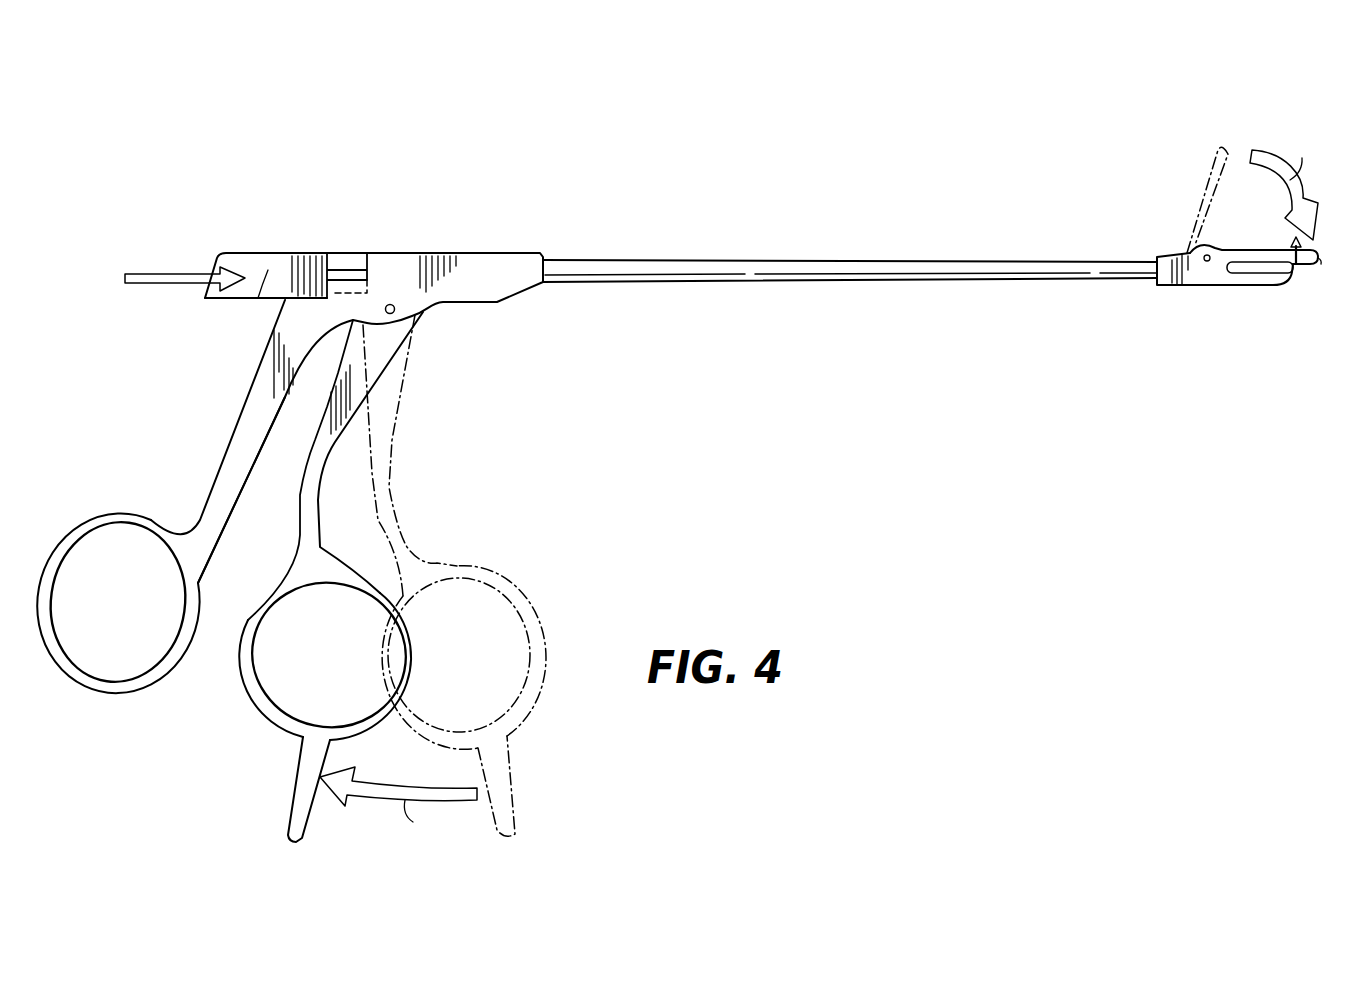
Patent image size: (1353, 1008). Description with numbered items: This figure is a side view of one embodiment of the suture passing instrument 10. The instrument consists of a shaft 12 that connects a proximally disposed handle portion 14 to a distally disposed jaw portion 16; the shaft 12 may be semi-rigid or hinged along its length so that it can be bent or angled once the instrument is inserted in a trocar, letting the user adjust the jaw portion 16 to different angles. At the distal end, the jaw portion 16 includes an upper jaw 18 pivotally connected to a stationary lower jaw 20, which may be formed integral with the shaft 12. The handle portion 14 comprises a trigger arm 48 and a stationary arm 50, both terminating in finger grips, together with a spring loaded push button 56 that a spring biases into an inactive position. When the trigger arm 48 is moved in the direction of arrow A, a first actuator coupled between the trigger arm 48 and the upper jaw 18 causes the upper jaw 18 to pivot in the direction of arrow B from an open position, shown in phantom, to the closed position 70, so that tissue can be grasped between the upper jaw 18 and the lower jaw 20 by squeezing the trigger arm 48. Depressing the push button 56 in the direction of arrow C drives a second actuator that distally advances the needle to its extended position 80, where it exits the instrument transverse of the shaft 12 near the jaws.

The suture passing instrument 10 is at (452, 197).
The shaft 12 is at (848, 268).
The handle portion 14 is at (291, 571).
The jaw portion 16 is at (1254, 270).
The upper jaw 18 is at (1227, 133).
The lower jaw 20 is at (1198, 273).
The trigger arm 48 is at (380, 360).
The stationary arm 50 is at (260, 400).
The push button 56 is at (277, 267).
The closed position 70 is at (1318, 257).
The extended position 80 is at (1302, 262).